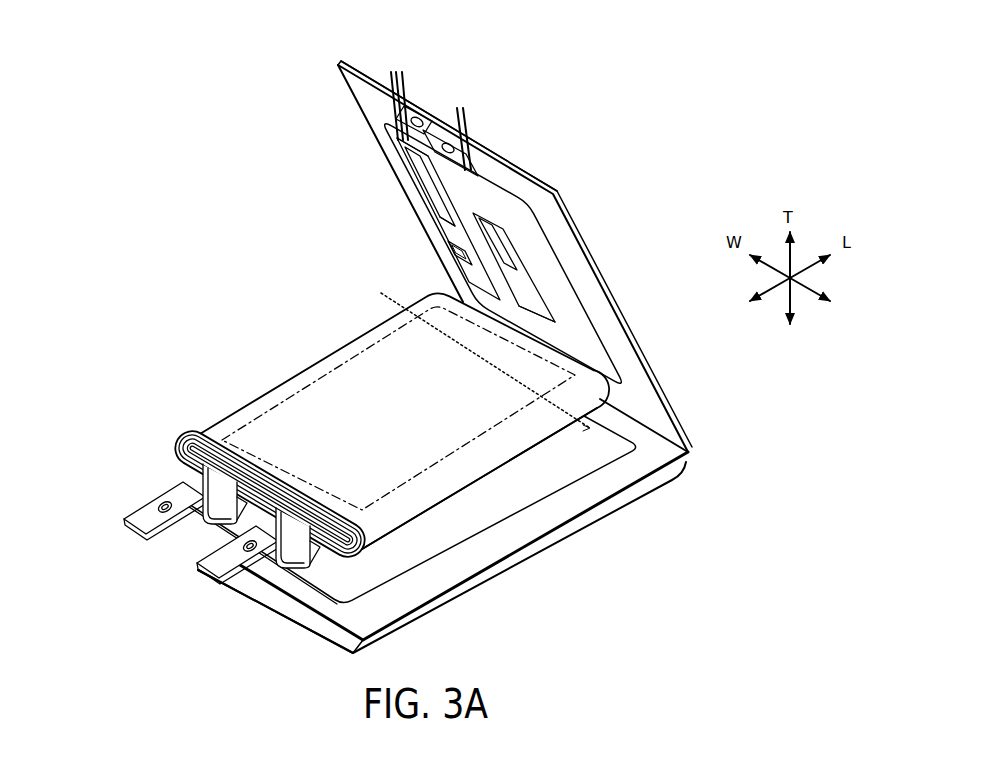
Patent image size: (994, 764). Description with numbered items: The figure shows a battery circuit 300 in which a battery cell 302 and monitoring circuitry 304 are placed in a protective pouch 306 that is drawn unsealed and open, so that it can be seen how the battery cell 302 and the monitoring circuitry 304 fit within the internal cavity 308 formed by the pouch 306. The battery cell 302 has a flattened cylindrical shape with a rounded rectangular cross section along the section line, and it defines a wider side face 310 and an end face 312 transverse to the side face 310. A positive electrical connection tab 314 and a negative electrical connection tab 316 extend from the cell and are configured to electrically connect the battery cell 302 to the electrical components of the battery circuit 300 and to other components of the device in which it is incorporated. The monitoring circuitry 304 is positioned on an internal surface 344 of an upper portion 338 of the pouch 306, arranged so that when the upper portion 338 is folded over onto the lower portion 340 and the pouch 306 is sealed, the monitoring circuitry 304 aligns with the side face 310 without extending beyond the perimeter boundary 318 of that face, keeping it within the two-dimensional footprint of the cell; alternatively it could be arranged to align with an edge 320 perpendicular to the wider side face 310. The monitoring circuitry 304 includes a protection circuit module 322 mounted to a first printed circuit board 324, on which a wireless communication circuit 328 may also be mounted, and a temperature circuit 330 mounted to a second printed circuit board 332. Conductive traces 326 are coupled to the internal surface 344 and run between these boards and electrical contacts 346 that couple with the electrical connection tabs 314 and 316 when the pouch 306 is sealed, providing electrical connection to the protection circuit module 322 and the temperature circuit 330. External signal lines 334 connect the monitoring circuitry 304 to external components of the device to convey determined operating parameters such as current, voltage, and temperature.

The battery circuit 300 is at (138, 126).
The battery cell 302 is at (340, 354).
The monitoring circuitry 304 is at (398, 206).
The protective pouch 306 is at (440, 612).
The internal cavity 308 is at (397, 582).
The side face 310 is at (461, 421).
The end face 312 is at (182, 468).
The positive electrical connection tab 314 is at (217, 578).
The negative electrical connection tab 316 is at (135, 532).
The perimeter boundary 318 is at (398, 322).
The edge 320 is at (530, 429).
The protection circuit module 322 is at (416, 177).
The first printed circuit board 324 is at (470, 276).
The conductive traces 326 is at (414, 157).
The wireless communication circuit 328 is at (428, 228).
The temperature circuit 330 is at (497, 249).
The second printed circuit board 332 is at (524, 293).
The external signal lines 334 is at (400, 62).
The upper portion 338 is at (628, 102).
The lower portion 340 is at (298, 642).
The internal surface 344 is at (504, 215).
The electrical contacts 346 is at (421, 114).